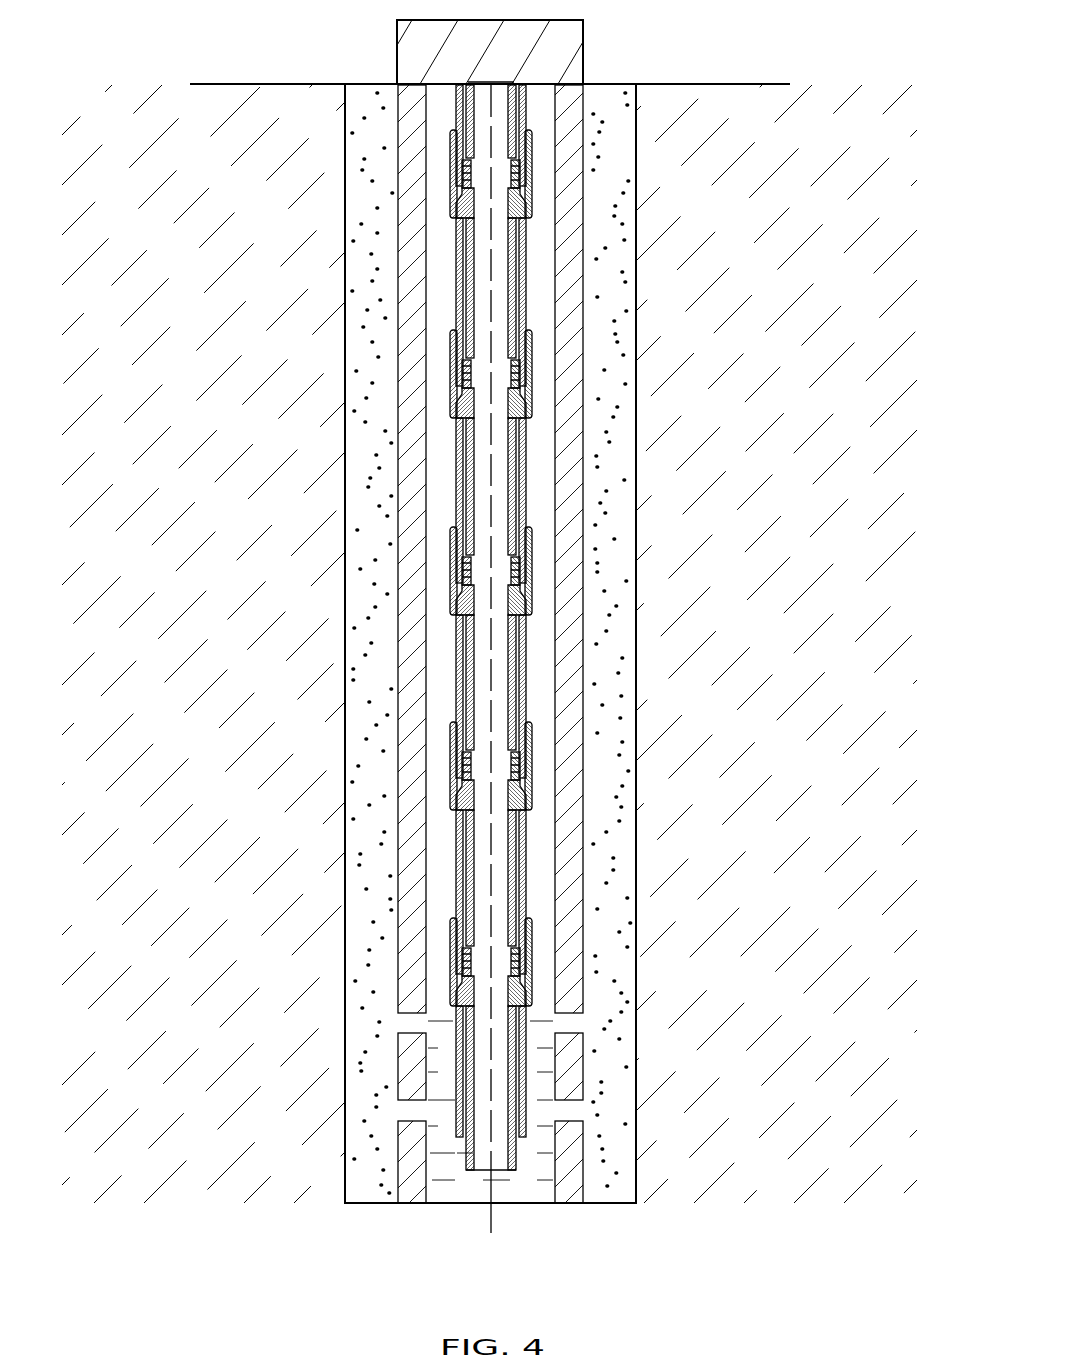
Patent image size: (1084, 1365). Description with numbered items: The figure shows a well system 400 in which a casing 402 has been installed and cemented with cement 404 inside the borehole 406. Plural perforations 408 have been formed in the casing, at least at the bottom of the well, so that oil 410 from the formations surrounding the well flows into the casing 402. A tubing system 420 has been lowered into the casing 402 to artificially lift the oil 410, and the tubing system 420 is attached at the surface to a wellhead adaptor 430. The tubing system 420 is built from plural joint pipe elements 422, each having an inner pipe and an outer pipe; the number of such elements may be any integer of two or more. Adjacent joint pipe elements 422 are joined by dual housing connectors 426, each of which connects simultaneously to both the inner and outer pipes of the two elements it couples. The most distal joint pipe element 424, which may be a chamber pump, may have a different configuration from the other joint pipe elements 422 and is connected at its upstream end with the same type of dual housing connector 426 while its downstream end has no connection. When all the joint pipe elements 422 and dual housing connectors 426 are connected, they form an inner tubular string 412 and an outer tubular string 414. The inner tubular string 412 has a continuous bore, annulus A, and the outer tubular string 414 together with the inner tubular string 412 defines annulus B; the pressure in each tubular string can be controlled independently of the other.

The well system 400 is at (828, 34).
The casing 402 is at (398, 243).
The cement 404 is at (371, 372).
The borehole 406 is at (346, 478).
The perforations 408 is at (407, 1022).
The oil 410 is at (447, 1182).
The inner tubular string 412 is at (462, 627).
The outer tubular string 414 is at (451, 689).
The tubing system 420 is at (544, 197).
The joint pipe element 422 is at (540, 635).
The most distal joint pipe element 424 is at (526, 1082).
The dual housing connector 426 is at (548, 576).
The wellhead adaptor 430 is at (584, 49).
The annulus A is at (498, 495).
The annulus B is at (528, 424).